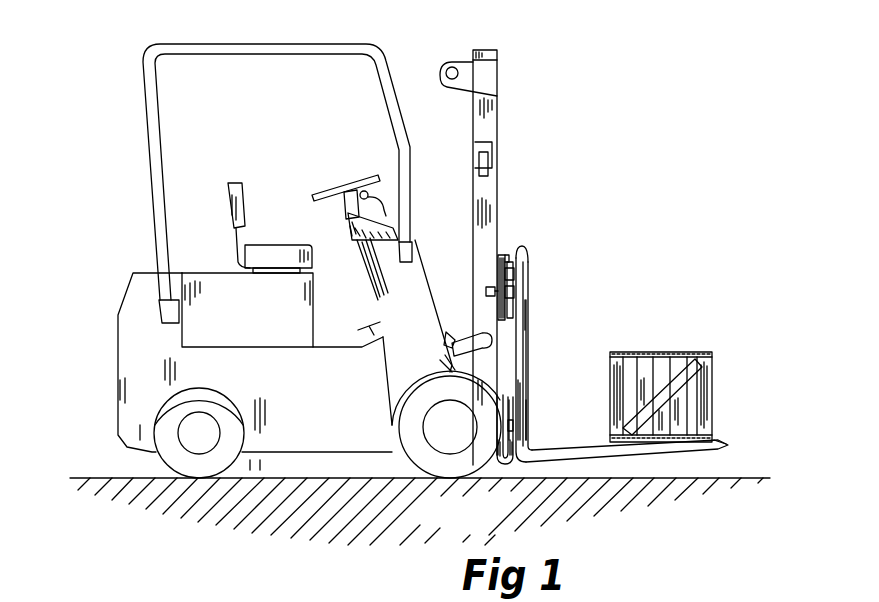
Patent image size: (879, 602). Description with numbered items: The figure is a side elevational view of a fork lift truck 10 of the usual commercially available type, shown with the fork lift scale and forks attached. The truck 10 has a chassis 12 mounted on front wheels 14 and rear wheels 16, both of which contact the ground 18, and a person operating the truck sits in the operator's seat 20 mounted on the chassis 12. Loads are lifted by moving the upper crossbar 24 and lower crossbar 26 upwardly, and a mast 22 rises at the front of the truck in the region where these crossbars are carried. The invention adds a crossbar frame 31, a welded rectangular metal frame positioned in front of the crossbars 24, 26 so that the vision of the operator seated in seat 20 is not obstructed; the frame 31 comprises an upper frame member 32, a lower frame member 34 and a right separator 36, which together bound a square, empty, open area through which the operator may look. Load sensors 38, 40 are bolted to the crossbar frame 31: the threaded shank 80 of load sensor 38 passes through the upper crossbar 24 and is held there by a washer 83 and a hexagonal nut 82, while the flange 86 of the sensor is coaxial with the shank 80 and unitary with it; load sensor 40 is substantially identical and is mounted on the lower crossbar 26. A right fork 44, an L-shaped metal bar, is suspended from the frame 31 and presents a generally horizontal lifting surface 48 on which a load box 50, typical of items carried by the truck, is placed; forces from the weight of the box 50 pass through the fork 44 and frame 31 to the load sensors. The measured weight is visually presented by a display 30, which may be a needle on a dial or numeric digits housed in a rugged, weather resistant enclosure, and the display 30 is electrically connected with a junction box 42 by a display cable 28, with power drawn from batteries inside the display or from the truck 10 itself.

The fork lift truck 10 is at (130, 74).
The chassis 12 is at (118, 351).
The front wheels 14 is at (412, 454).
The rear wheels 16 is at (167, 455).
The ground 18 is at (72, 478).
The operator's seat 20 is at (233, 183).
The mast 22 is at (499, 119).
The upper crossbar 24 is at (501, 257).
The lower crossbar 26 is at (500, 463).
The display cable 28 is at (513, 458).
The display 30 is at (350, 224).
The crossbar frame 31 is at (537, 256).
The upper frame member 32 is at (516, 316).
The lower frame member 34 is at (520, 466).
The right separator 36 is at (524, 376).
The load sensor 38 is at (520, 283).
The load sensor 40 is at (511, 426).
The junction box 42 is at (507, 258).
The right fork 44 is at (536, 357).
The lifting surface 48 is at (702, 452).
The load box 50 is at (712, 357).
The threaded shank 80 is at (486, 292).
The nut 82 is at (508, 276).
The washer 83 is at (488, 300).
The flange 86 is at (514, 300).